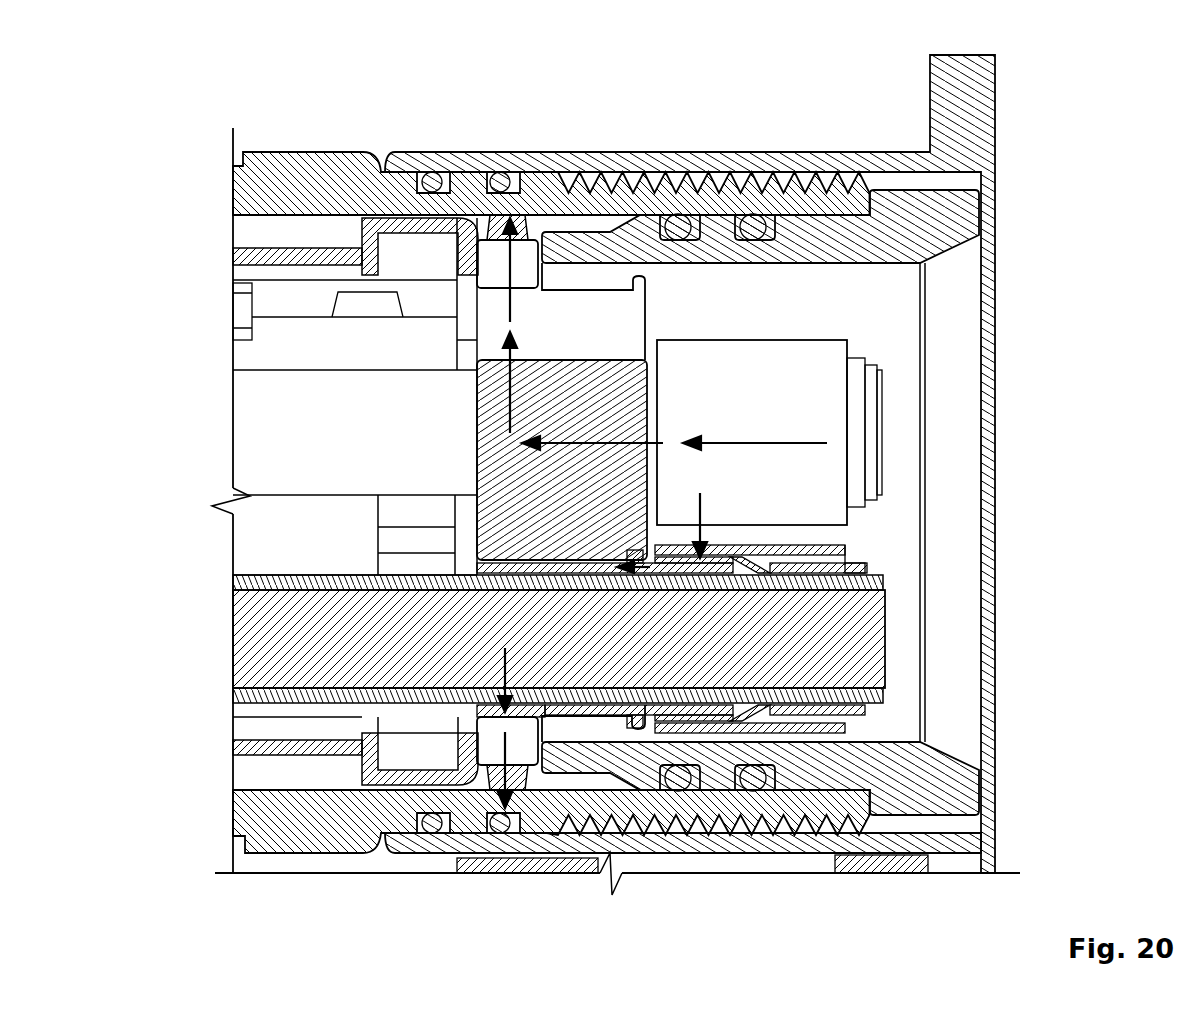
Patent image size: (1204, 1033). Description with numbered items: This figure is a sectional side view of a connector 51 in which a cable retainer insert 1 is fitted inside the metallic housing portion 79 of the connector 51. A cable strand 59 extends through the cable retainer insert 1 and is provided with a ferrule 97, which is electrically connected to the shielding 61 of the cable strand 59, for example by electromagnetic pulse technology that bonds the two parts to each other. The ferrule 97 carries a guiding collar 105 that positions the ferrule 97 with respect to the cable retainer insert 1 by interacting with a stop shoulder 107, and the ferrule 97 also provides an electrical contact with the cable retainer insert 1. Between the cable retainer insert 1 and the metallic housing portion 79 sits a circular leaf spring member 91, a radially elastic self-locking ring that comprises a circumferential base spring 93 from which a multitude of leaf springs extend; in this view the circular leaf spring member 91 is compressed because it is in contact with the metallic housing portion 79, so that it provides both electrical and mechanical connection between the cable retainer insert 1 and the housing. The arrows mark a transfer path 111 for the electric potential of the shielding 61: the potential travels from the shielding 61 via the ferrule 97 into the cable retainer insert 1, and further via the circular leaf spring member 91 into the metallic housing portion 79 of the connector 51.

The connector 51 is at (498, 78).
The metallic housing portion 79 is at (390, 162).
The circular leaf spring member 91 is at (540, 222).
The circumferential base spring 93 is at (480, 788).
The ferrule 97 is at (610, 713).
The guiding collar 105 is at (648, 357).
The stop shoulder 107 is at (652, 400).
The shielding 61 is at (827, 357).
The cable strand 59 is at (233, 467).
The cable retainer insert 1 is at (487, 503).
The transfer path 111 is at (512, 300).